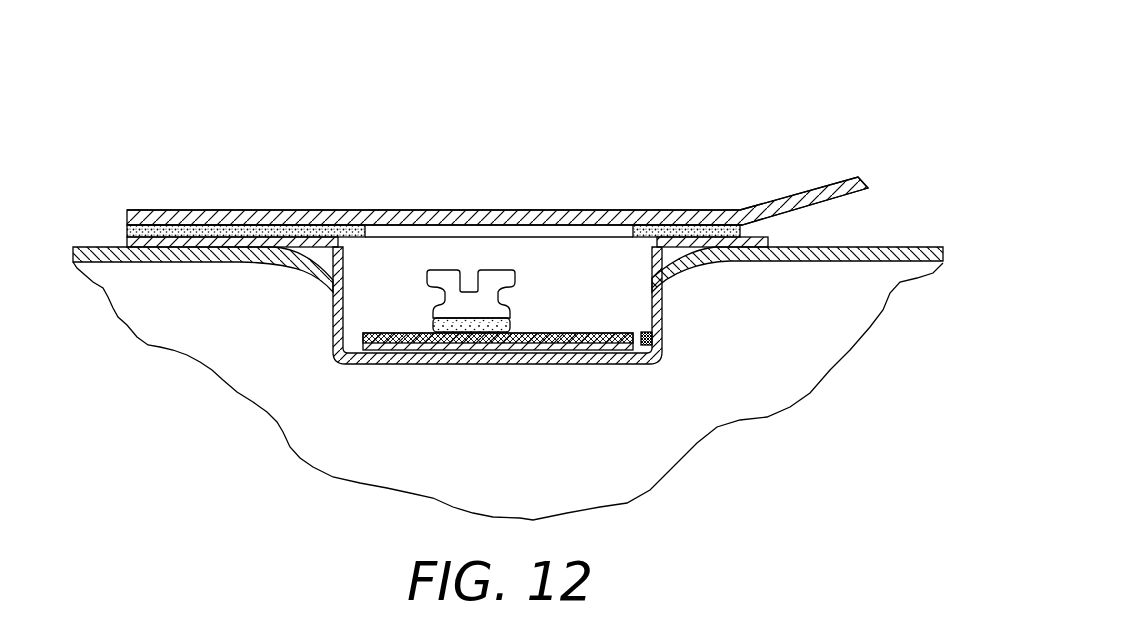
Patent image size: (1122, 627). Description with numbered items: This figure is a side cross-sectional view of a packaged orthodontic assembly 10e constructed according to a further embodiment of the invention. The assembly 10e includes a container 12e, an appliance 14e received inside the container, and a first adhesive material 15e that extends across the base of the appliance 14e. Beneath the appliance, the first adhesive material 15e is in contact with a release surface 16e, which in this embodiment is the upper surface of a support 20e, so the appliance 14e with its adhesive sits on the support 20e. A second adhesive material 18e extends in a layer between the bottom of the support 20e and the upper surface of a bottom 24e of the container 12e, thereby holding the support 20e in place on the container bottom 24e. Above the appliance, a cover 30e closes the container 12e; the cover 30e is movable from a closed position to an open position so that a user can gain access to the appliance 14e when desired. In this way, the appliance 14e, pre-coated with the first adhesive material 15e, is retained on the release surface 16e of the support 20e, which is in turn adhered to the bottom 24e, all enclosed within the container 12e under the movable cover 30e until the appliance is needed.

The packaged orthodontic assembly 10e is at (238, 162).
The container 12e is at (355, 207).
The appliance 14e is at (498, 268).
The first adhesive material 15e is at (512, 328).
The release surface 16e is at (399, 332).
The second adhesive material 18e is at (418, 350).
The support 20e is at (657, 338).
The bottom 24e is at (570, 365).
The cover 30e is at (594, 207).